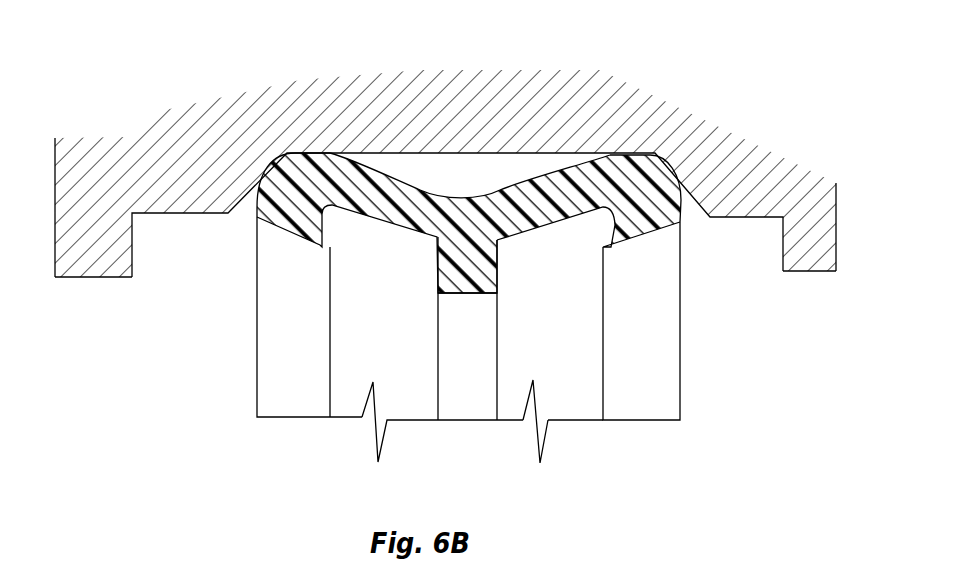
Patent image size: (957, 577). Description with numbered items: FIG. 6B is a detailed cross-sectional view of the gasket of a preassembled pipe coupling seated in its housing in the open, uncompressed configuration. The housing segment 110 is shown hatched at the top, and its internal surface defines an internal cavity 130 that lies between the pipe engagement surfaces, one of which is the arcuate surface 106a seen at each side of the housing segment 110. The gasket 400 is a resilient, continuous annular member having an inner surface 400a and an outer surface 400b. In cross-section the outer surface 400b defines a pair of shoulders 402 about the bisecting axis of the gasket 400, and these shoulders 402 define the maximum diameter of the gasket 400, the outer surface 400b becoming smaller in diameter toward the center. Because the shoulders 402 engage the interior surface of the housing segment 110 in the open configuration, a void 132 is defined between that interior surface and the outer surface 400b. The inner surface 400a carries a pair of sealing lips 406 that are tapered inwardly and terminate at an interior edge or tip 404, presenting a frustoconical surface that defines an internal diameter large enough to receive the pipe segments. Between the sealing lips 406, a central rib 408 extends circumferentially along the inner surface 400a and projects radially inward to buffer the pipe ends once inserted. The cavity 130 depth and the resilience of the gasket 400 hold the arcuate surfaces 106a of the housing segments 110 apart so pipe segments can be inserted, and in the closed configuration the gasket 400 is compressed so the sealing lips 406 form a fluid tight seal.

The housing segment 110 is at (105, 170).
The arcuate surface 106a is at (100, 278).
The internal cavity 130 is at (168, 326).
The void 132 is at (477, 180).
The gasket 400 is at (553, 185).
The inner surface 400a is at (557, 233).
The outer surface 400b is at (393, 176).
The shoulder 402 is at (303, 152).
The interior edge or tip 404 is at (332, 323).
The sealing lip 406 is at (272, 286).
The central rib 408 is at (500, 268).